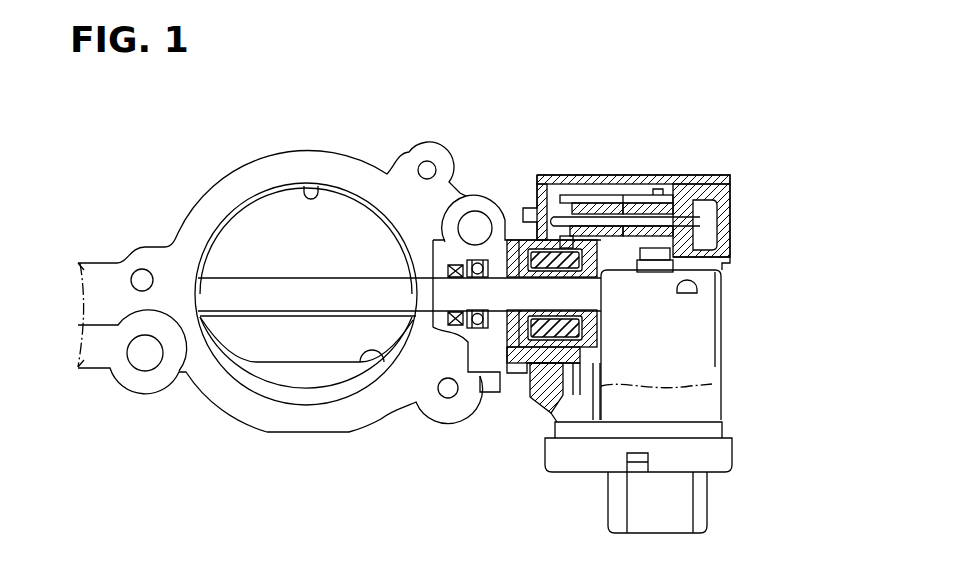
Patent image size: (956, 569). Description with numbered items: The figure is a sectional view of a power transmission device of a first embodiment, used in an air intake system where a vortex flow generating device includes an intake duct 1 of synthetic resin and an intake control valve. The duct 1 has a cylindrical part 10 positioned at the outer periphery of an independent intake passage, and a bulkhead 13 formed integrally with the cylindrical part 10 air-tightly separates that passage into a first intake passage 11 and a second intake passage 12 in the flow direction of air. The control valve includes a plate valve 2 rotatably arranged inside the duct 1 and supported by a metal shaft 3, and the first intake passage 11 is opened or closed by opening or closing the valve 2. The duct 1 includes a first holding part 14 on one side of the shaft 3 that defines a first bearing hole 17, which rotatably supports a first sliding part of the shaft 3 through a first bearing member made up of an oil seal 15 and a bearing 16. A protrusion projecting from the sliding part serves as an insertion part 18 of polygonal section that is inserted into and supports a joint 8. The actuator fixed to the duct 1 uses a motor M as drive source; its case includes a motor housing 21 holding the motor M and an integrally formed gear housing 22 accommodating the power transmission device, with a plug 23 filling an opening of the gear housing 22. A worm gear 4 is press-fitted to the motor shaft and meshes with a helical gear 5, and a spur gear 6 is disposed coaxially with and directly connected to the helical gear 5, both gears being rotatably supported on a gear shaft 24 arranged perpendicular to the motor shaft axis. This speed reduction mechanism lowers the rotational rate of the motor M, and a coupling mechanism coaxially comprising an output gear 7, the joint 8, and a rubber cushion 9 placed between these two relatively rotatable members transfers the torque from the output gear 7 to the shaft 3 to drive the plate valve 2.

The intake duct 1 is at (196, 187).
The plate valve 2 is at (287, 212).
The shaft 3 is at (428, 277).
The worm gear 4 is at (720, 262).
The helical gear 5 is at (639, 196).
The spur gear 6 is at (576, 196).
The output gear 7 is at (521, 203).
The joint 8 is at (583, 318).
The rubber cushion 9 is at (530, 398).
The cylindrical part 10 is at (226, 187).
The first intake passage 11 is at (318, 184).
The second intake passage 12 is at (362, 352).
The bulkhead 13 is at (266, 317).
The first holding part 14 is at (465, 410).
The oil seal 15 is at (447, 263).
The bearing 16 is at (480, 258).
The first bearing hole 17 is at (421, 401).
The insertion part 18 is at (585, 297).
The motor housing 21 is at (717, 362).
The gear housing 22 is at (619, 196).
The plug 23 is at (728, 185).
The gear shaft 24 is at (690, 222).
The motor M is at (698, 346).